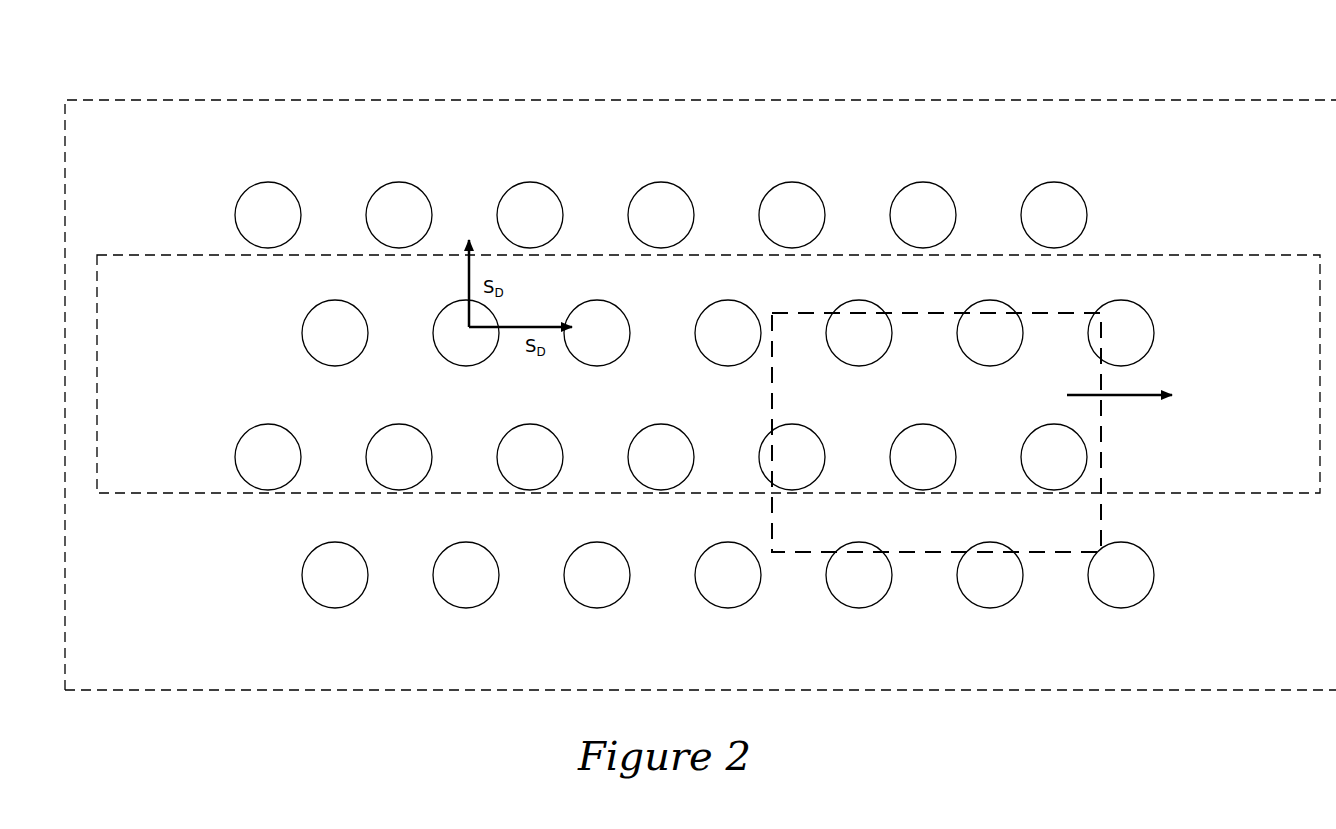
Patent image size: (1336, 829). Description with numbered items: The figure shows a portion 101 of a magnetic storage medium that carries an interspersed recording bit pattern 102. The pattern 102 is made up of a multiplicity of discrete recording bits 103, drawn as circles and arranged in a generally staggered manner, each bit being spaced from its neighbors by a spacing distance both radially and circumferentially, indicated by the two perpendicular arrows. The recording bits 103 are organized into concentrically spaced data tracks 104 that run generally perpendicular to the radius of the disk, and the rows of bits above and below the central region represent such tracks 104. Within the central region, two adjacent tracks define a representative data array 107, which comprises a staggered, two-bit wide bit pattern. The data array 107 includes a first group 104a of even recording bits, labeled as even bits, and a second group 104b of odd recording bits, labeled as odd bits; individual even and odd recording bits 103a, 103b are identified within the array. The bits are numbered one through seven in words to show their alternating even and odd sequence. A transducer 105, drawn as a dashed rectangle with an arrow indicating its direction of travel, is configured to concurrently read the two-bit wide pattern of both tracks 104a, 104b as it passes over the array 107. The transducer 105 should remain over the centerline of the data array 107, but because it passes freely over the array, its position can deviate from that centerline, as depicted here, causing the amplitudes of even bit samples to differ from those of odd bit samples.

The portion of a magnetic storage medium 101 is at (733, 100).
The interspersed recording bit pattern 102 is at (868, 124).
The recording bit 103 is at (286, 185).
The even recording bit 103a is at (859, 300).
The odd recording bit 103b is at (923, 424).
The data track 104 is at (1126, 191).
The first group of even recording bits 104a is at (1190, 318).
The second group of odd recording bits 104b is at (1132, 432).
The transducer 105 is at (913, 525).
The data array 107 is at (1228, 255).